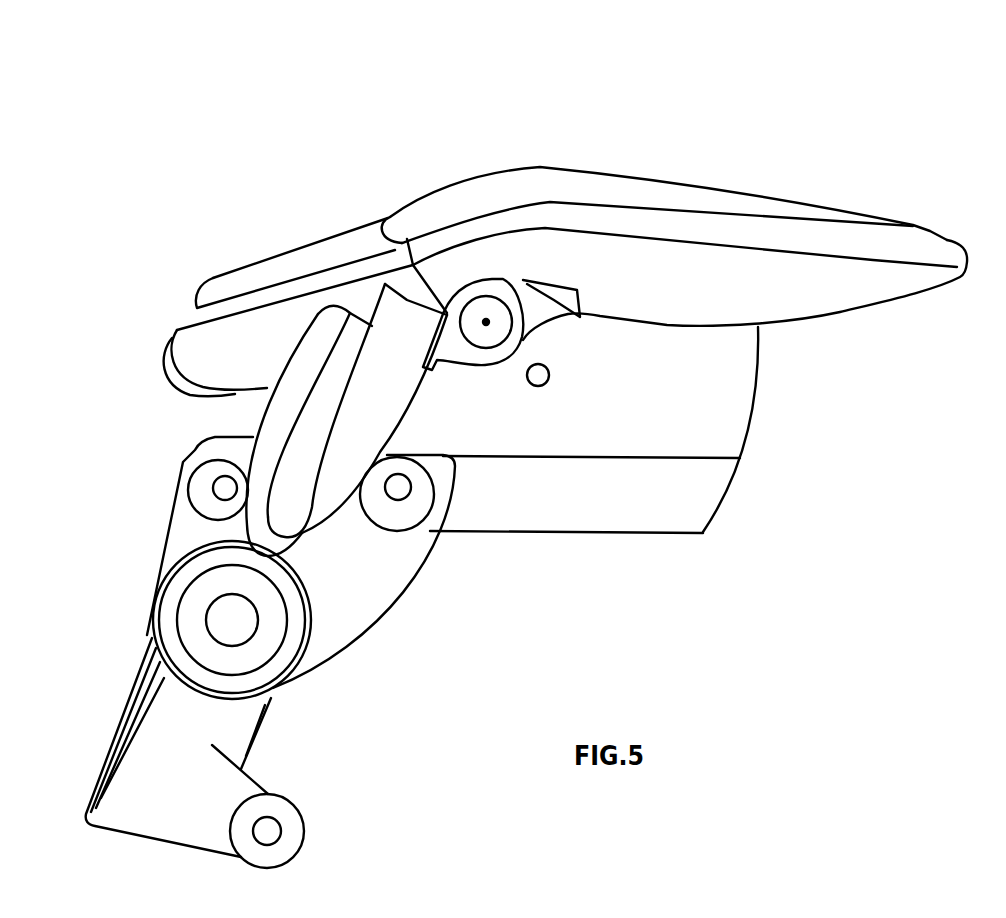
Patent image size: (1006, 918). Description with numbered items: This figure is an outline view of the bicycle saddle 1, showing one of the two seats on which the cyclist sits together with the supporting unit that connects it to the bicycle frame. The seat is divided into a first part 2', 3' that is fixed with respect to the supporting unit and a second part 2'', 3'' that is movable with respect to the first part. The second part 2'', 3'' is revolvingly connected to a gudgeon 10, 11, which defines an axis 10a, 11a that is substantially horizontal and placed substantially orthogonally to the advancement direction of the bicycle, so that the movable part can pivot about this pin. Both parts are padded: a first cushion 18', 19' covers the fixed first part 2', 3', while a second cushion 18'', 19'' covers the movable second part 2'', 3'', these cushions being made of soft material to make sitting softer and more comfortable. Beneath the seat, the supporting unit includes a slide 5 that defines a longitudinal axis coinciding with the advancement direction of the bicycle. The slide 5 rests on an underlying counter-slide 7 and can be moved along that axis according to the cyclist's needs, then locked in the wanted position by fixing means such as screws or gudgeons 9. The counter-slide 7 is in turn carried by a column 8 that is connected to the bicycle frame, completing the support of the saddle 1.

The saddle 1 is at (266, 106).
The first part of the seat 2' is at (698, 300).
The second part of the seat 2'' is at (219, 330).
The first part of the seat 3' is at (698, 300).
The second part of the seat 3'' is at (395, 457).
The slide 5 is at (698, 503).
The counter-slide 7 is at (358, 590).
The column 8 is at (160, 737).
The gudgeons 9 is at (222, 488).
The gudgeon 10 is at (492, 335).
The axis 10a is at (486, 322).
The gudgeon 11 is at (666, 377).
The axis 11a is at (598, 309).
The first cushion 18' is at (664, 162).
The second cushion 18'' is at (233, 263).
The first cushion 19' is at (664, 162).
The second cushion 19'' is at (209, 431).